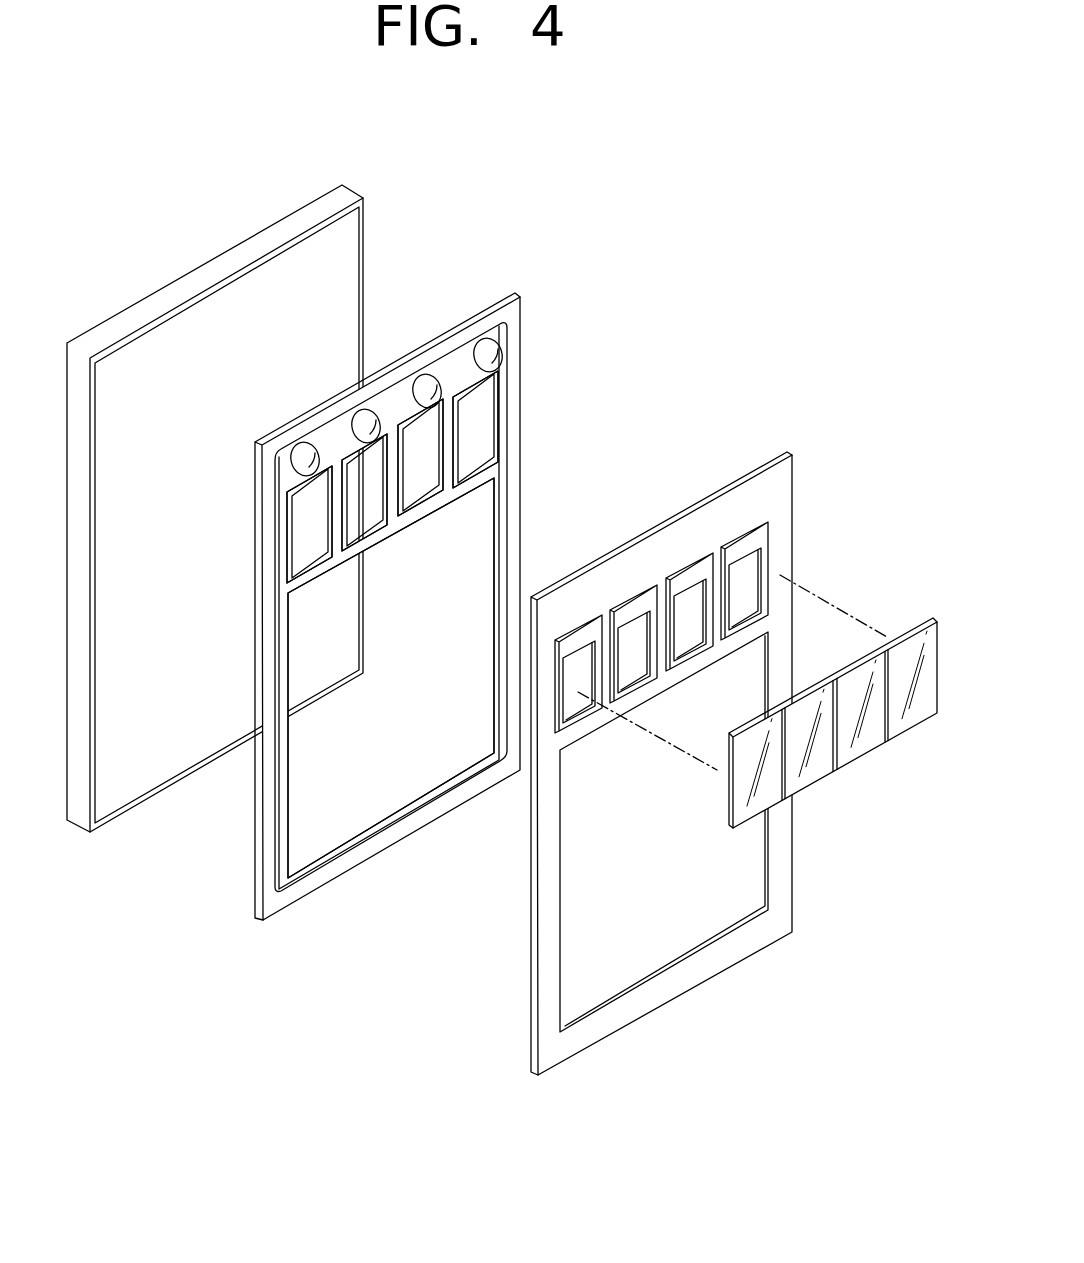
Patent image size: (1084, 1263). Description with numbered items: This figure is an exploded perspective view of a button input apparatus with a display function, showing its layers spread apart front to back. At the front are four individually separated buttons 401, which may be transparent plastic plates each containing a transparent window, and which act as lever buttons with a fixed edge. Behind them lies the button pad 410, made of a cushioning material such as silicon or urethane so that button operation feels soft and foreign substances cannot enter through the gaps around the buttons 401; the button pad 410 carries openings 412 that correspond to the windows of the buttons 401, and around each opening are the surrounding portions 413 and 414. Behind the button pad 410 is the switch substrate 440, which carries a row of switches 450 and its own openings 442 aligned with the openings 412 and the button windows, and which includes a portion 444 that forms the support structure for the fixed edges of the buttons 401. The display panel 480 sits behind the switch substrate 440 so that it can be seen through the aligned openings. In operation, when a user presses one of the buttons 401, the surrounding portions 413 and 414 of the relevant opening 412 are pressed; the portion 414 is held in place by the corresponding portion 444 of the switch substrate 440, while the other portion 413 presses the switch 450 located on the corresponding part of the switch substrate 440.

The buttons 401 is at (918, 620).
The button pad 410 is at (707, 721).
The openings 412 is at (748, 572).
The surrounding portion 413 is at (751, 541).
The supported portion 414 is at (750, 627).
The switch substrate 440 is at (438, 578).
The openings 442 is at (473, 428).
The support portion 444 is at (475, 483).
The switches 450 is at (500, 355).
The display panel 480 is at (378, 222).